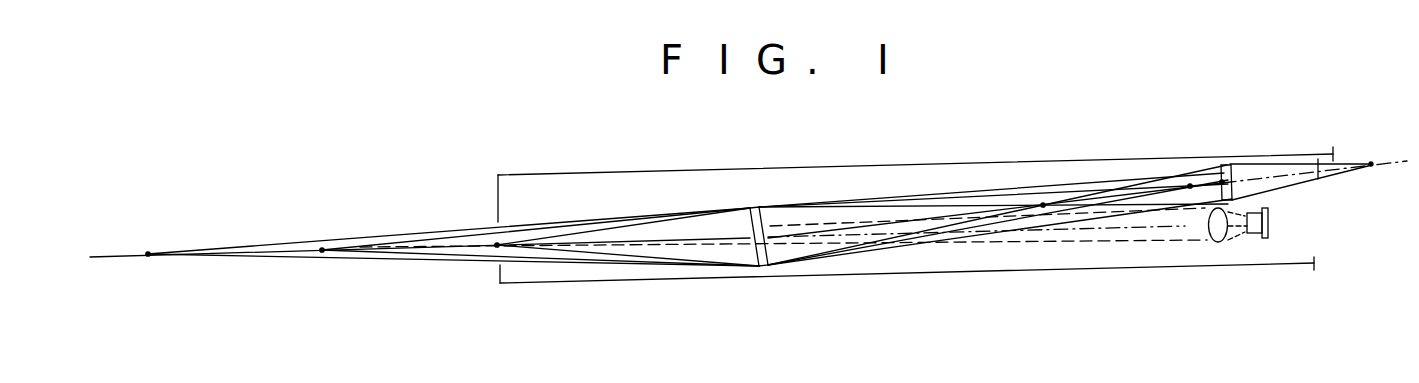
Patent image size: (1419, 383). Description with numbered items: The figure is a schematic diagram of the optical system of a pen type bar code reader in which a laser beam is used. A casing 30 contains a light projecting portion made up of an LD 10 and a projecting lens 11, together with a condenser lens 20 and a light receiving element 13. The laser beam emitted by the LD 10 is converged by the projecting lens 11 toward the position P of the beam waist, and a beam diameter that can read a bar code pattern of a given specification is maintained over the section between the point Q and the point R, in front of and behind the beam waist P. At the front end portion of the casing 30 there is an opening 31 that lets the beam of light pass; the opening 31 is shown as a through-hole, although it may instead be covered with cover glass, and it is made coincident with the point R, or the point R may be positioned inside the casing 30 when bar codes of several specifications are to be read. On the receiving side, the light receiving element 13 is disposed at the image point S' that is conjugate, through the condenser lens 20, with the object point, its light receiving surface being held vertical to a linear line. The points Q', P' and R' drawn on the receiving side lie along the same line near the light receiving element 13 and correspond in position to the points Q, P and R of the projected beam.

The LD 10 is at (1254, 234).
The projecting lens 11 is at (1217, 243).
The light receiving element 13 is at (1224, 178).
The condenser lens 20 is at (756, 207).
The casing 30 is at (858, 167).
The opening 31 is at (498, 222).
The point Q is at (449, 234).
The position P of the beam waist P is at (539, 231).
The point R is at (599, 255).
The image point Q' is at (993, 191).
The image point P' is at (993, 188).
The image point S' is at (1200, 131).
The image point R' is at (1069, 187).